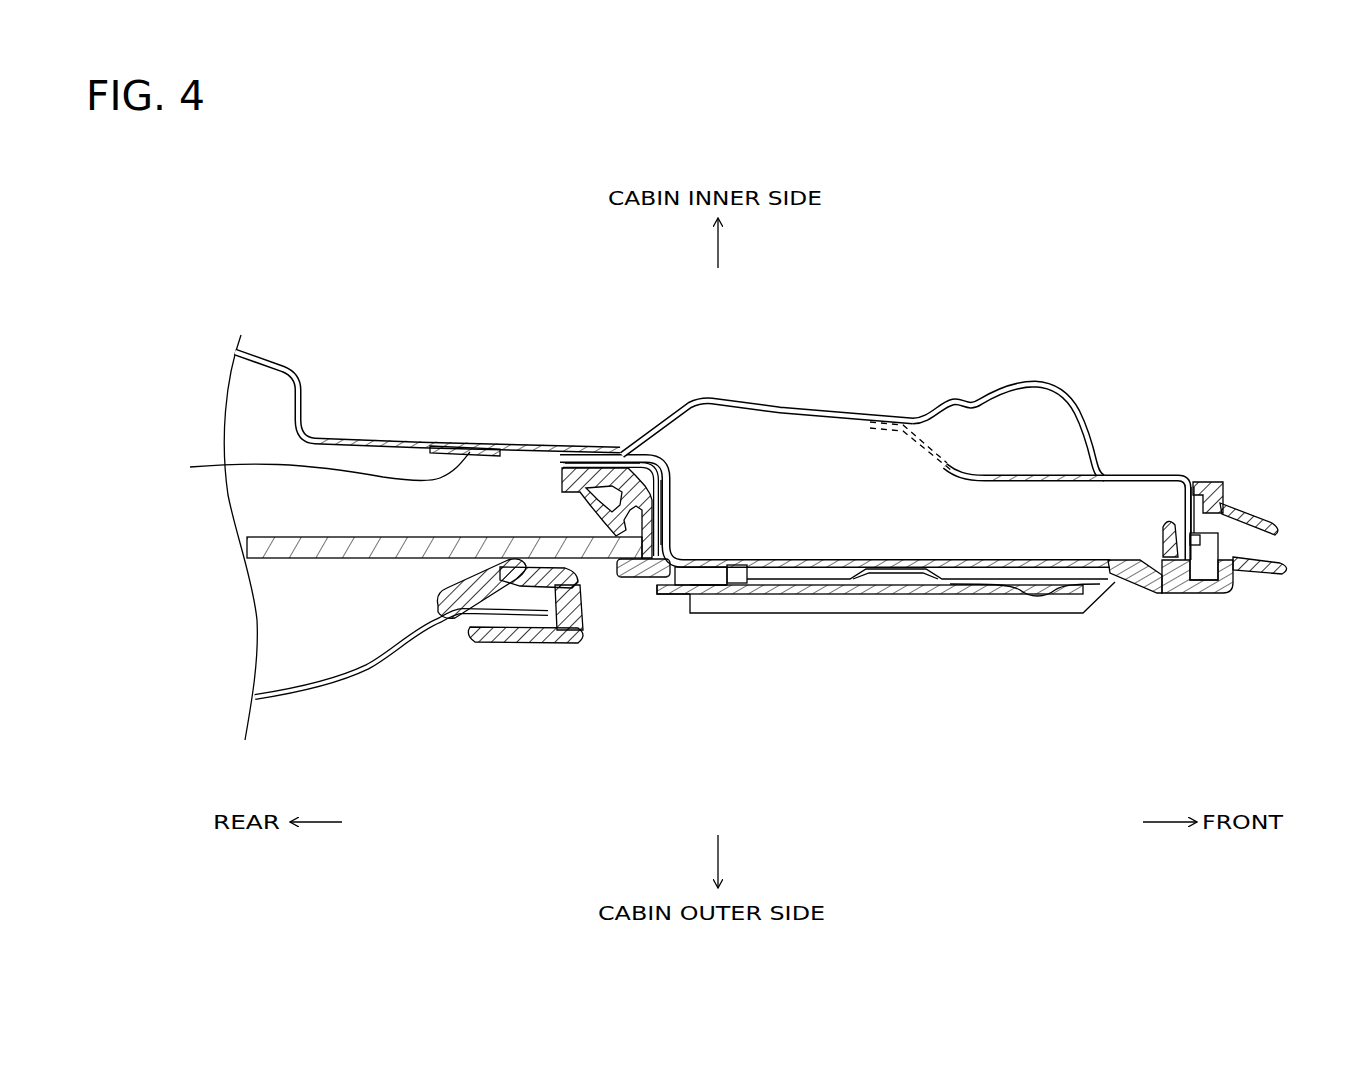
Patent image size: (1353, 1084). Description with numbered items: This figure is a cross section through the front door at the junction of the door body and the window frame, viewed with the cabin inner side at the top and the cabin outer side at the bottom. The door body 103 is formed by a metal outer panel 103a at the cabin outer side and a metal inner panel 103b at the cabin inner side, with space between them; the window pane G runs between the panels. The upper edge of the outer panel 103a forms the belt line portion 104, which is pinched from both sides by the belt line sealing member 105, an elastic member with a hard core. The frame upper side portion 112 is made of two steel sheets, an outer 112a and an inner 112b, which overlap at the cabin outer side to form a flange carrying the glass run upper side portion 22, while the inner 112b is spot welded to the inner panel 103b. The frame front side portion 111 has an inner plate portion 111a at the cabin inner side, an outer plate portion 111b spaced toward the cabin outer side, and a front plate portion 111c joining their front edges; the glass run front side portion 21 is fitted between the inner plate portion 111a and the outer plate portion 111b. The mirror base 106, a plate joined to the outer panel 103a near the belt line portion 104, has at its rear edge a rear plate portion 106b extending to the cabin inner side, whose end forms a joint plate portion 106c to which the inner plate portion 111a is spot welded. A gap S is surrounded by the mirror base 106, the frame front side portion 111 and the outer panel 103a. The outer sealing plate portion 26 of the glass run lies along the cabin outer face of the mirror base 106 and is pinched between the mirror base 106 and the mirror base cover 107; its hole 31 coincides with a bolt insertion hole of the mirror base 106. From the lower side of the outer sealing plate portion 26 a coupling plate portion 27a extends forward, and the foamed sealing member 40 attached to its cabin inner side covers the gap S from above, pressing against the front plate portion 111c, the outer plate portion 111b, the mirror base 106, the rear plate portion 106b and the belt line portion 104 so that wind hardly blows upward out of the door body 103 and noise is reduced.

The door body 103 is at (279, 362).
The outer panel 103a is at (327, 690).
The inner panel 103b is at (396, 440).
The inner 112b is at (1030, 377).
The window pane G is at (335, 558).
The glass run front side portion 21 is at (560, 470).
The frame front side portion 111 is at (645, 588).
The inner plate portion 111a is at (571, 460).
The outer plate portion 111b is at (635, 582).
The front plate portion 111c is at (690, 520).
The mirror base 106 is at (1040, 558).
The rear plate portion 106b is at (668, 468).
The joint plate portion 106c is at (615, 450).
The sealing member 40 is at (745, 565).
The outer sealing plate portion 26 is at (965, 583).
The coupling plate portion 27a is at (670, 588).
The gap S is at (702, 580).
The mirror base cover 107 is at (1025, 612).
The hole 31 is at (1070, 592).
The glass run upper side portion 22 is at (1200, 594).
The frame upper side portion 112 is at (1238, 572).
The outer 112a is at (965, 480).
The belt line portion 104 is at (450, 622).
The belt line sealing member 105 is at (575, 628).